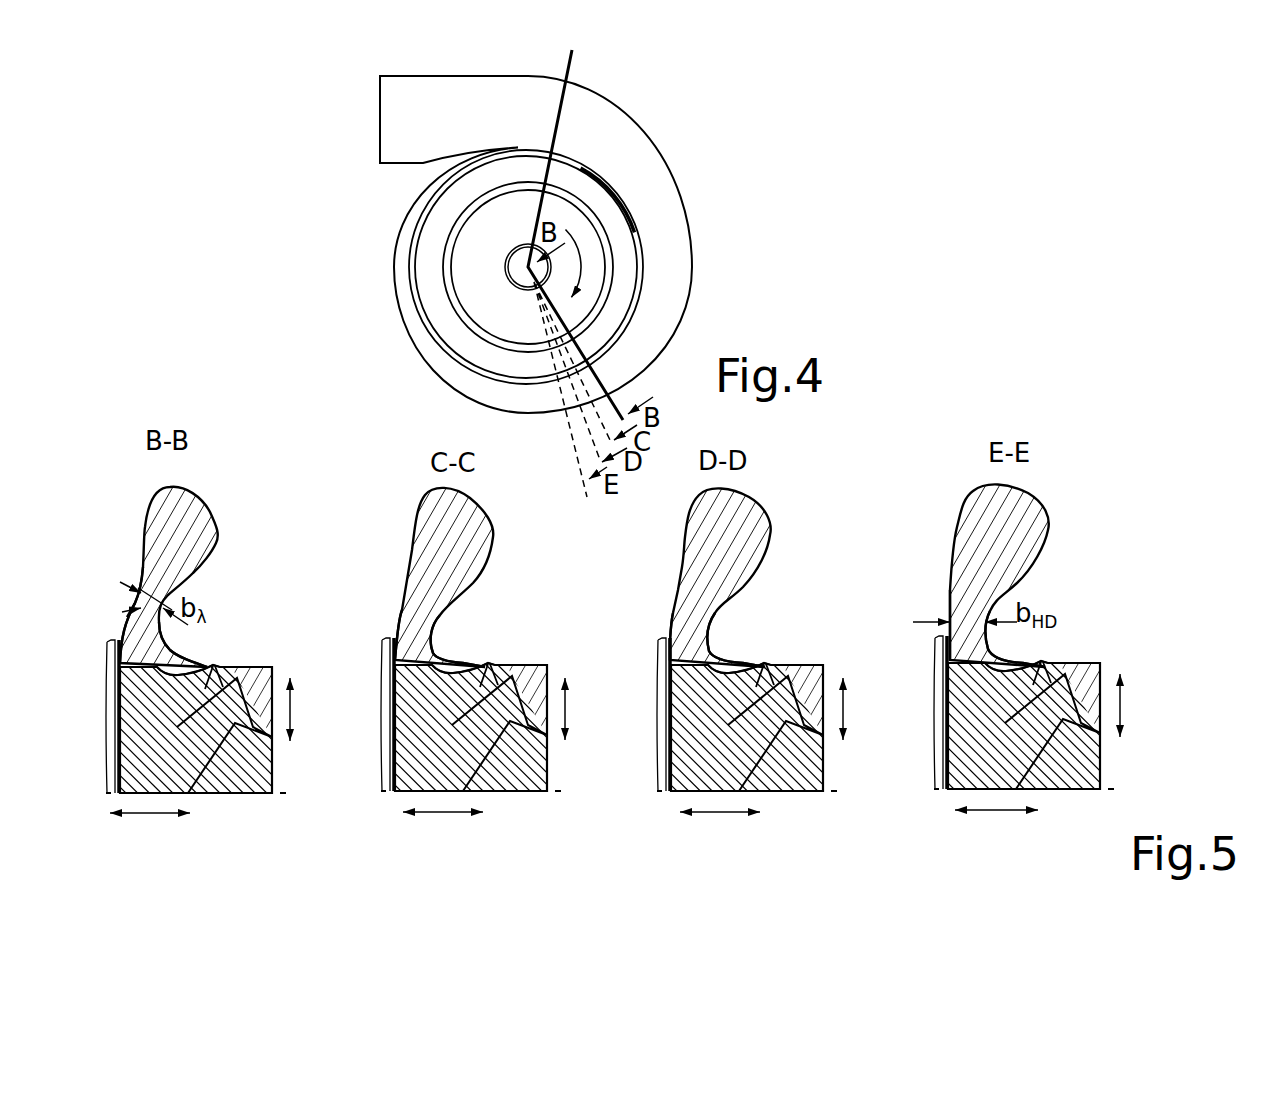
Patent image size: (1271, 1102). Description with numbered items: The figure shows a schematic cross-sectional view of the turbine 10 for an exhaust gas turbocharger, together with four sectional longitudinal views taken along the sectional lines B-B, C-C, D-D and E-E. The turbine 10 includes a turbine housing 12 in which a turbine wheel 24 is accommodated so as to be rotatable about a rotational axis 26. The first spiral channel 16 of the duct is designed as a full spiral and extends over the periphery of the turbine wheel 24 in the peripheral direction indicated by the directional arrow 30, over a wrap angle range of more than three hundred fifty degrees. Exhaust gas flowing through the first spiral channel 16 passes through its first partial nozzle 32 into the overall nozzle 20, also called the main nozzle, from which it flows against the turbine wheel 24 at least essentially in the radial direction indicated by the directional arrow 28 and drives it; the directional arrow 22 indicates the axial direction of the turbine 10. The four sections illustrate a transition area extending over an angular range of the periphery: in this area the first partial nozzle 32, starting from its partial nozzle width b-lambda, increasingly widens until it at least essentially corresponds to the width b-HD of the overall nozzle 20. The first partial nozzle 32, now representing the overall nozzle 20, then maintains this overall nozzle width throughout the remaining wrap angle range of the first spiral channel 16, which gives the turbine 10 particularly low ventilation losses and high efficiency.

In FIG. 4, the turbine 10 is at (517, 445).
In FIG. 5, the turbine 10 is at (254, 837).
In FIG. 4, the turbine housing 12 is at (380, 118).
In FIG. 5, the first spiral channel 16 is at (186, 529).
In FIG. 5, the overall nozzle 20 is at (143, 638).
In FIG. 5, the directional arrow 22 is at (148, 817).
In FIG. 5, the turbine wheel 24 is at (214, 666).
In FIG. 5, the rotational axis 26 is at (91, 793).
In FIG. 5, the directional arrow 28 is at (293, 708).
In FIG. 4, the directional arrow 30 is at (583, 258).
In FIG. 5, the first partial nozzle 32 is at (118, 621).